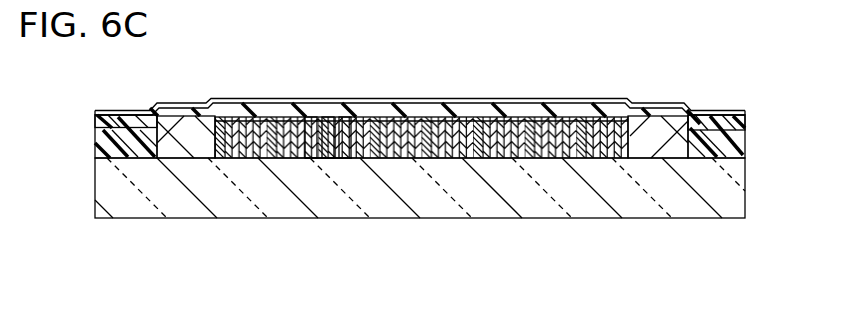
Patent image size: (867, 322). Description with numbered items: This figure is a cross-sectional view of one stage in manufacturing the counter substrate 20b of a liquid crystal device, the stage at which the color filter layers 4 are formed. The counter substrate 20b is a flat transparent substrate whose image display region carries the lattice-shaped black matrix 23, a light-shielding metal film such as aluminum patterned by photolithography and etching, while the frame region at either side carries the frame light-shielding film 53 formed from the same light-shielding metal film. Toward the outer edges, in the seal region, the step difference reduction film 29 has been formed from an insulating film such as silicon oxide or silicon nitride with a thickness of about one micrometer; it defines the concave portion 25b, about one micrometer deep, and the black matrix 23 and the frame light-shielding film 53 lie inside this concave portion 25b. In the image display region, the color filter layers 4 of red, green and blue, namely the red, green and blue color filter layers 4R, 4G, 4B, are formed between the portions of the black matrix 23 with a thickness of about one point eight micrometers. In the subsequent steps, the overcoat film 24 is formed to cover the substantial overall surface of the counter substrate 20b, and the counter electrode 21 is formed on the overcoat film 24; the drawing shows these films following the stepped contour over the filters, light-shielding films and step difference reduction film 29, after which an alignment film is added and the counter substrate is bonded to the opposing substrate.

The counter electrode 21 is at (128, 110).
The overcoat film 24 is at (112, 121).
The step difference reduction film 29 is at (110, 145).
The concave portion 25b is at (702, 141).
The counter substrate 20b is at (735, 200).
The frame light-shielding film 53 is at (177, 142).
The black matrix 23 is at (395, 160).
The color filter layers 4 is at (380, 279).
The red color filter layer 4R is at (311, 157).
The green color filter layer 4G is at (328, 157).
The blue color filter layer 4B is at (343, 157).